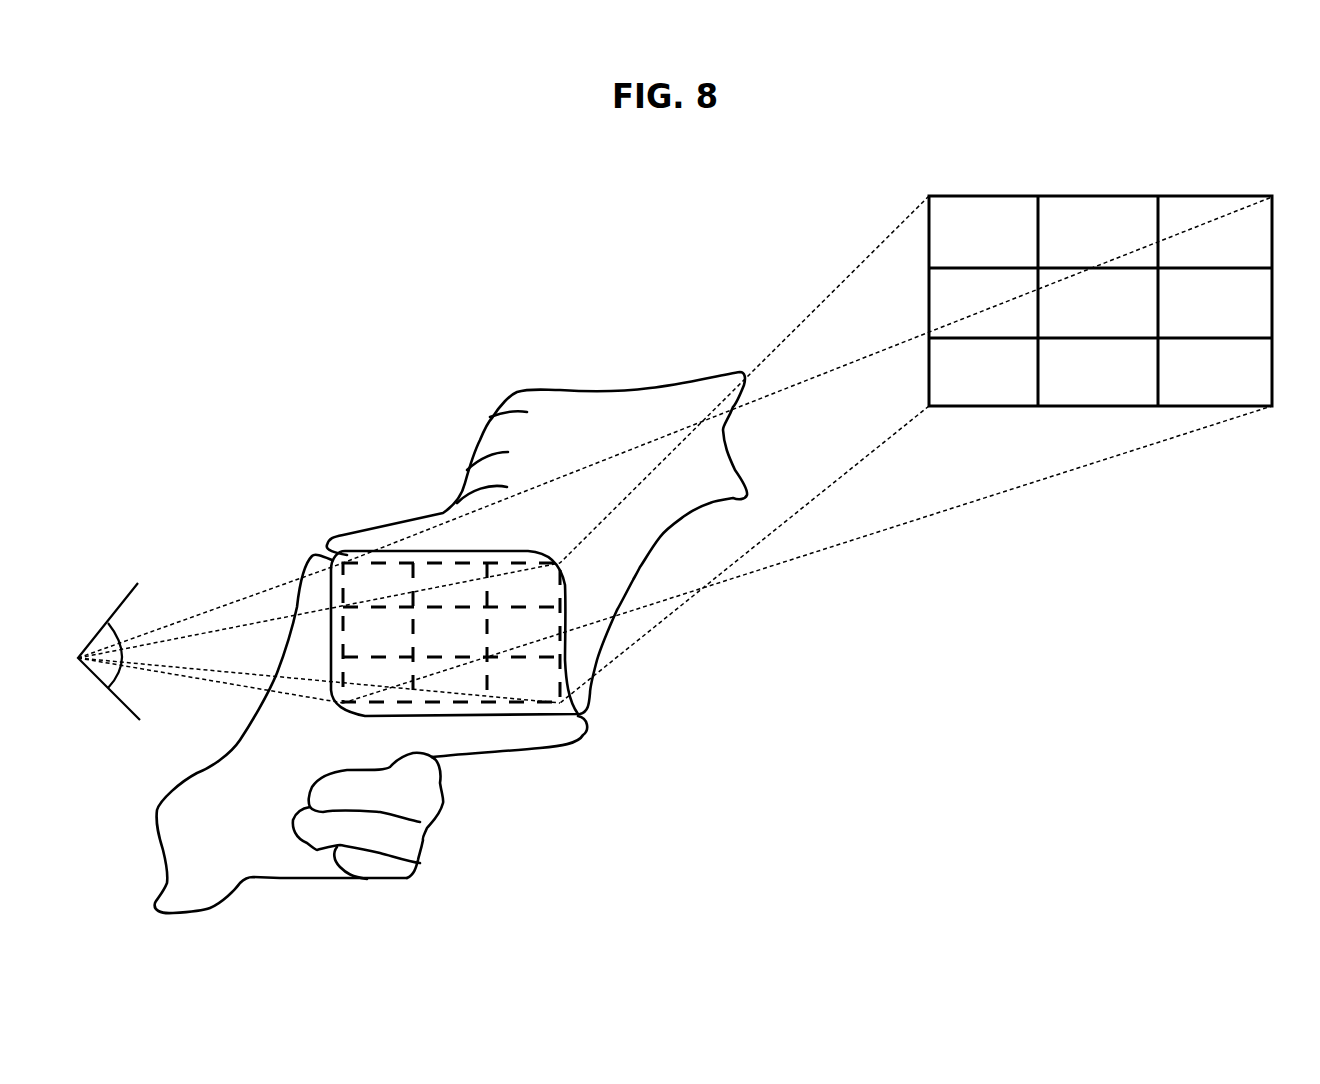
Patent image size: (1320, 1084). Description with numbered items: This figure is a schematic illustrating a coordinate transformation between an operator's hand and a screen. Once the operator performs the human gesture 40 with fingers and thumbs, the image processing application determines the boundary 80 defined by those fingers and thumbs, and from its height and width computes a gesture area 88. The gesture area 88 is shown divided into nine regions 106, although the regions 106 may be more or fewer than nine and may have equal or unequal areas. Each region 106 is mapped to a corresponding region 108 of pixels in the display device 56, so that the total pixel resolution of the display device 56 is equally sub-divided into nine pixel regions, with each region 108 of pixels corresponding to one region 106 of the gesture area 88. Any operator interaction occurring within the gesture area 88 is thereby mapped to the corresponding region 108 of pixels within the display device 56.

The human gesture 40 is at (492, 418).
The display device 56 is at (1100, 196).
The boundary 80 is at (333, 567).
The gesture area 88 is at (568, 705).
The region 106 is at (543, 680).
The region of pixels 108 is at (1235, 377).